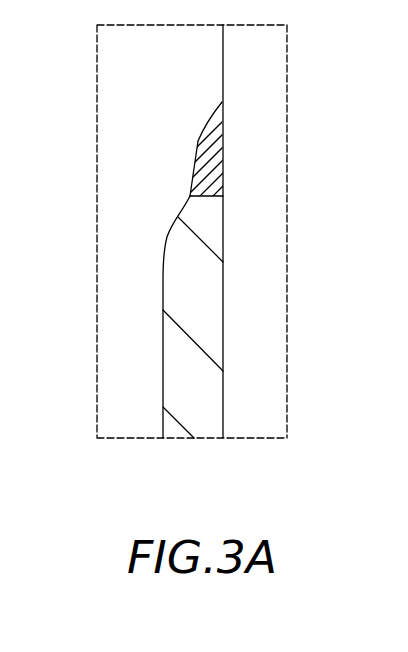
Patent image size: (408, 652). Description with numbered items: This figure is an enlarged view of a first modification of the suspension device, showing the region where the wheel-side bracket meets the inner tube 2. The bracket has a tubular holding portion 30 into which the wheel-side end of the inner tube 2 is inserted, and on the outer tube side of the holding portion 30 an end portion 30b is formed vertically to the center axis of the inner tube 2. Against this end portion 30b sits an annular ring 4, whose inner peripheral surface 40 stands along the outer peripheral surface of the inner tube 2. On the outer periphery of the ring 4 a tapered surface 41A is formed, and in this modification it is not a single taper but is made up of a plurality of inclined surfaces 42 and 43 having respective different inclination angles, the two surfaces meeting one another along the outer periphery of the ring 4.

The inner tube 2 is at (253, 383).
The ring 4 is at (233, 121).
The holding portion 30 is at (183, 352).
The end portion 30b is at (223, 181).
The inner peripheral surface 40 is at (223, 148).
The tapered surface 41A is at (192, 143).
The inclined surface 42 is at (217, 113).
The inclined surface 43 is at (192, 179).